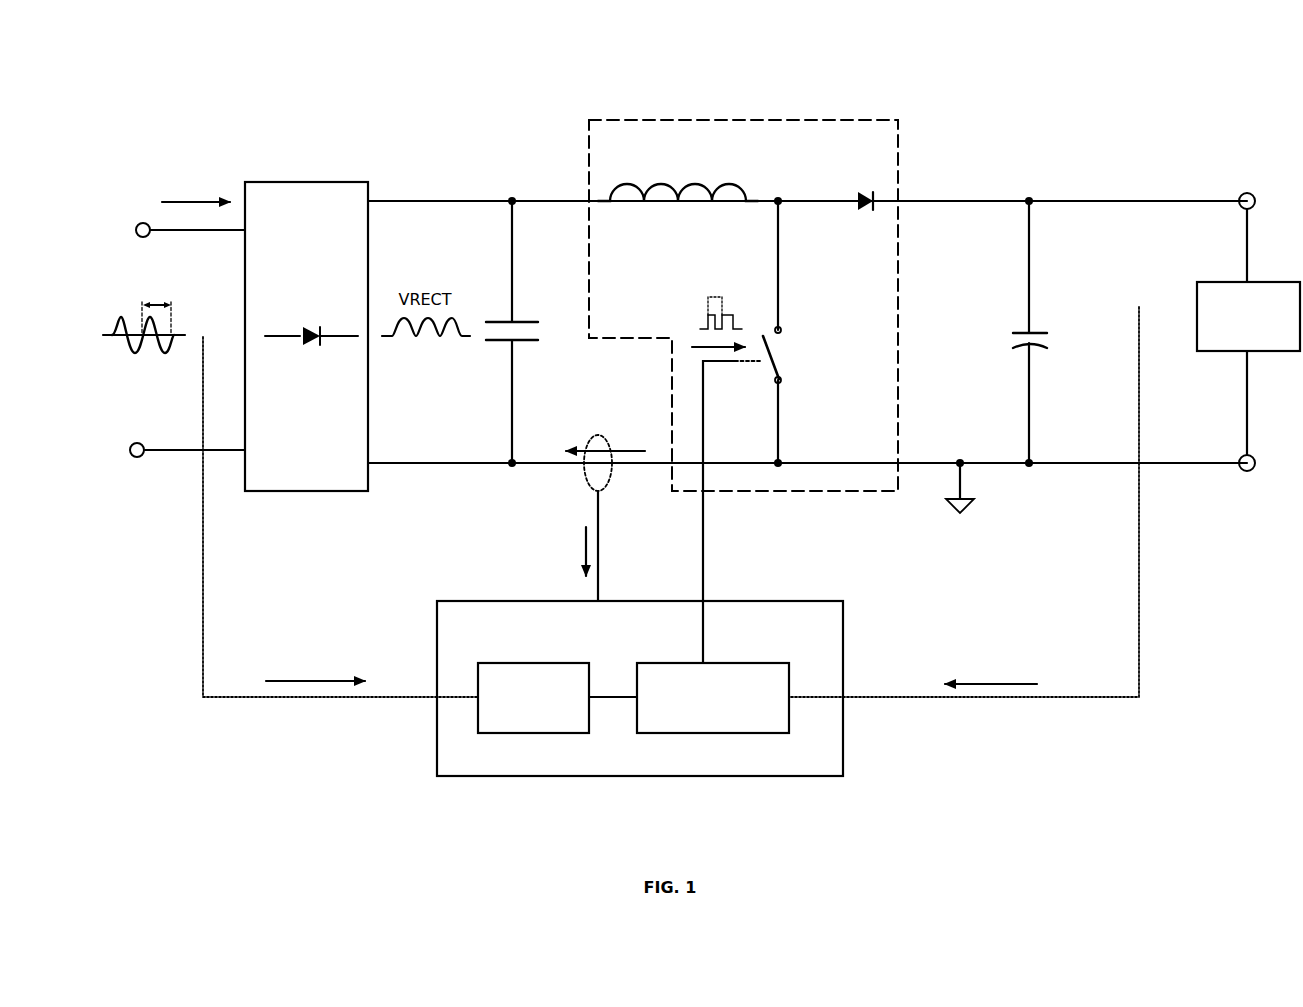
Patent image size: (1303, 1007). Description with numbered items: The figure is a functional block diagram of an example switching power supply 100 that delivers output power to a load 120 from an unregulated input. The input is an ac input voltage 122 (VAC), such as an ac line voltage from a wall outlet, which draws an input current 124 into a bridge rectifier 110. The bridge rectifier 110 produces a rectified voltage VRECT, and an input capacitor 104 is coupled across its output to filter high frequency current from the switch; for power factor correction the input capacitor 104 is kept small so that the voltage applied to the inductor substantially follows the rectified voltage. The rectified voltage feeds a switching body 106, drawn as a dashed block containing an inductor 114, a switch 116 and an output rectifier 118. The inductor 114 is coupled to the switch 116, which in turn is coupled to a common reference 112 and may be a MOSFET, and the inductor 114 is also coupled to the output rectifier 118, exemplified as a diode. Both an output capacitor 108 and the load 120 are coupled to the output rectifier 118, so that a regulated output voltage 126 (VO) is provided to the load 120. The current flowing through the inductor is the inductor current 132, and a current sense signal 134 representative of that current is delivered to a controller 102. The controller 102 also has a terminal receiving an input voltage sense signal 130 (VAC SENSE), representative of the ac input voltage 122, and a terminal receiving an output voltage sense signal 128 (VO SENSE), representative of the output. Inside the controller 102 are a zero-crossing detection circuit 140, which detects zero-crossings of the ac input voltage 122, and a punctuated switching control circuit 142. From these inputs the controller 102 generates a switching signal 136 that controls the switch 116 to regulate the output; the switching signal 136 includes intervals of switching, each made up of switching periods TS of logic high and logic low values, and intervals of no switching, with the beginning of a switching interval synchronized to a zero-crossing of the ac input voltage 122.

The switching power supply 100 is at (1203, 137).
The controller 102 is at (815, 585).
The input capacitor 104 is at (530, 311).
The switching body 106 is at (905, 131).
The output capacitor 108 is at (1018, 350).
The bridge rectifier 110 is at (337, 175).
The common reference 112 is at (968, 493).
The inductor 114 is at (678, 166).
The switch 116 is at (787, 368).
The output rectifier 118 is at (864, 214).
The load 120 is at (1228, 278).
The ac input voltage 122 is at (113, 368).
The input current 124 is at (196, 198).
The output voltage 126 is at (1085, 325).
The output voltage sense signal 128 is at (992, 668).
The input voltage sense signal 130 is at (330, 667).
The inductor current 132 is at (620, 437).
The current sense signal 134 is at (575, 547).
The switching signal 136 is at (695, 340).
The zero-crossing detection circuit 140 is at (575, 738).
The punctuated switching control circuit 142 is at (745, 738).